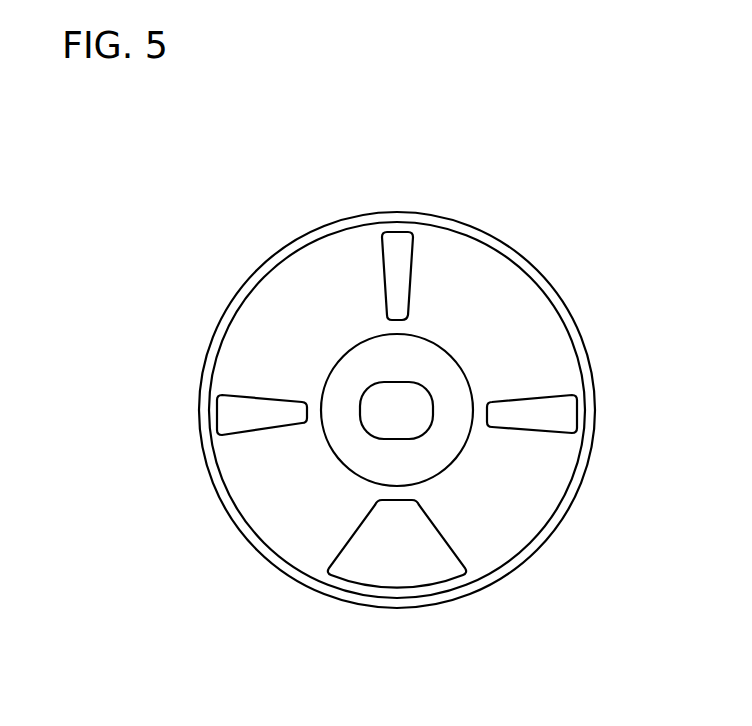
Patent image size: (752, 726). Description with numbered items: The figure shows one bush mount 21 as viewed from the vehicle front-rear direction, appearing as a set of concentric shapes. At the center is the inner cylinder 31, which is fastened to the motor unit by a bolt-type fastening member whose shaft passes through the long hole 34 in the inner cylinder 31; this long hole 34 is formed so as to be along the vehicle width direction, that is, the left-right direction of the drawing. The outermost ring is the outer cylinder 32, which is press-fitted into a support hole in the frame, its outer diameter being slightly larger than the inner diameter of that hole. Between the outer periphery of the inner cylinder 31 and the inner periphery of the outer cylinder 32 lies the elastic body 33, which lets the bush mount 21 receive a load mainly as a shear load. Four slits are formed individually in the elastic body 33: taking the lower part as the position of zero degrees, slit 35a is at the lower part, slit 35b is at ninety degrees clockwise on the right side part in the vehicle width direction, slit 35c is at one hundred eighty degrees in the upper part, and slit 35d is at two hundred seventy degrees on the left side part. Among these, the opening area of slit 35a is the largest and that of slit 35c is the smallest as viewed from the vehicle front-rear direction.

The bush mount 21 is at (547, 268).
The inner cylinder 31 is at (447, 368).
The outer cylinder 32 is at (553, 527).
The elastic body 33 is at (552, 472).
The long hole 34 is at (365, 398).
The slit 35a is at (402, 572).
The slit 35b is at (224, 412).
The slit 35c is at (397, 247).
The slit 35d is at (563, 415).